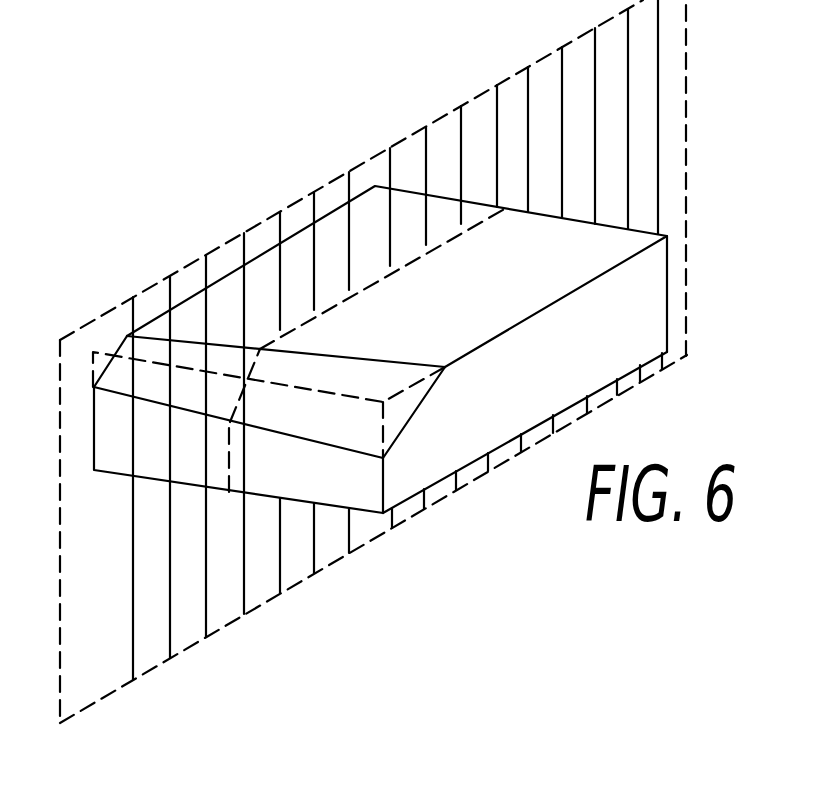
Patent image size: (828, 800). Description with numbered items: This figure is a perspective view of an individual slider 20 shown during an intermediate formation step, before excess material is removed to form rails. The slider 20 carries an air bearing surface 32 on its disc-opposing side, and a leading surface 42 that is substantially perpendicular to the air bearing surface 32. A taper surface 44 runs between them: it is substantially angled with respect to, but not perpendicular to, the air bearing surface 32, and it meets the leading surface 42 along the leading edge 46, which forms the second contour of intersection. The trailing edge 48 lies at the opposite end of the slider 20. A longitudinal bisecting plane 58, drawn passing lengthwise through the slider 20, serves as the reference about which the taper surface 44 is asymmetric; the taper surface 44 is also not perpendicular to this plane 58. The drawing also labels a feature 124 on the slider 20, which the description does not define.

The slider 20 is at (443, 354).
The air bearing surface 32 is at (600, 245).
The leading surface 42 is at (275, 468).
The taper surface 44 is at (358, 428).
The leading edge 46 is at (340, 450).
The trailing edge 48 is at (640, 230).
The longitudinal bisecting plane 58 is at (672, 22).
The top edge of inclined wall 124 is at (330, 352).